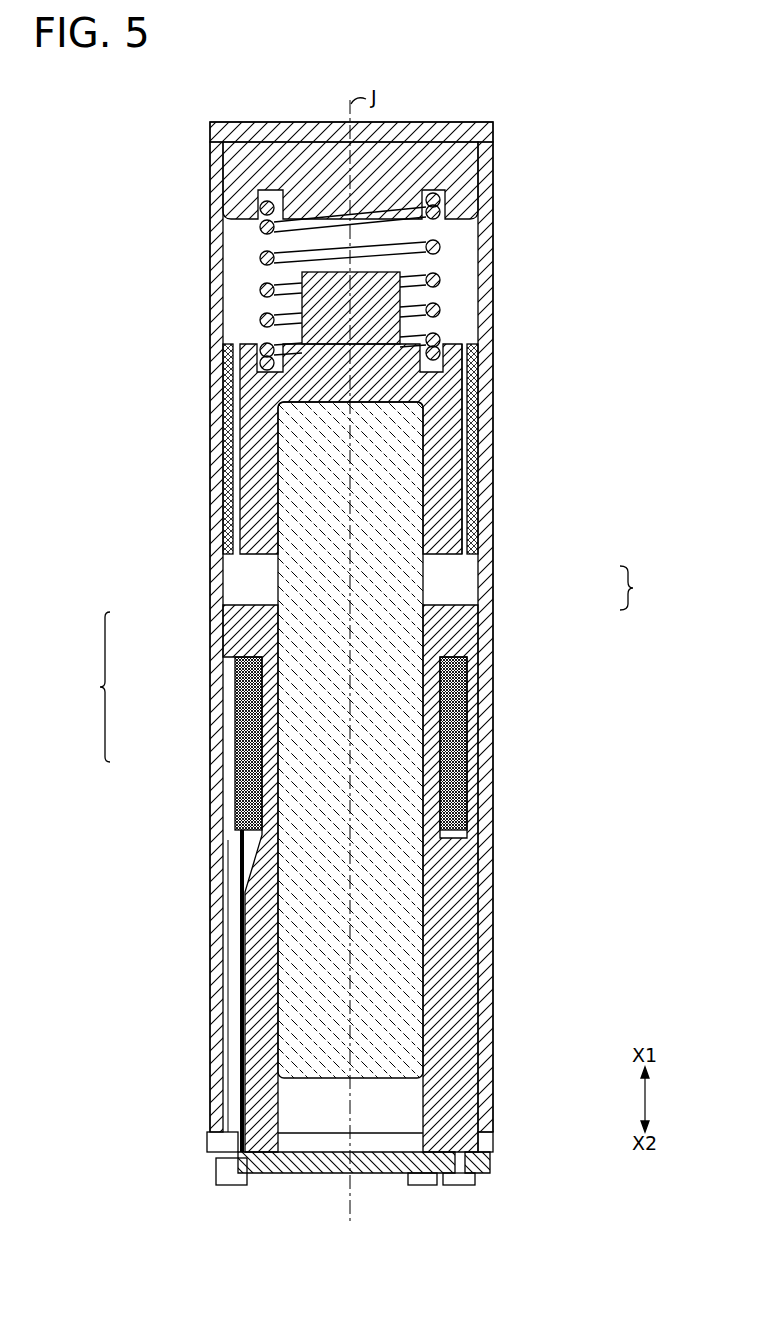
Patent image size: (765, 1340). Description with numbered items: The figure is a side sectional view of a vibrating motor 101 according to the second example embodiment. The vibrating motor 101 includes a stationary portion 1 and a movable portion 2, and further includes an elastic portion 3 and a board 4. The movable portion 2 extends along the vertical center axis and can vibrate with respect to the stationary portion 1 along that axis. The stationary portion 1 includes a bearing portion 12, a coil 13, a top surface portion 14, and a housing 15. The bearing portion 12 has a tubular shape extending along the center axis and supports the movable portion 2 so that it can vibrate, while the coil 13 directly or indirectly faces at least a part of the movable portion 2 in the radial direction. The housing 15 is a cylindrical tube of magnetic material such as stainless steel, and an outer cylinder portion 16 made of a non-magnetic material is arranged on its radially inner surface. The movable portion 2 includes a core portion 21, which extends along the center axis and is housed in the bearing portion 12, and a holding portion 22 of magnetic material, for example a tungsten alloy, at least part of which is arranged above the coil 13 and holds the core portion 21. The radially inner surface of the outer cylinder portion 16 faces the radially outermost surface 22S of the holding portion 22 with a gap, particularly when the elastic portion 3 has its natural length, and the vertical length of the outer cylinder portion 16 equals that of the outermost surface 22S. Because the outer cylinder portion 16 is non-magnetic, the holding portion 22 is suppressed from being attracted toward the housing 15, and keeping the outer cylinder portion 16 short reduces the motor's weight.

The vibrating motor 101 is at (496, 98).
The stationary portion 1 is at (99, 687).
The movable portion 2 is at (634, 588).
The elastic portion 3 is at (422, 253).
The board 4 is at (278, 1168).
The bearing portion 12 is at (240, 630).
The coil 13 is at (235, 735).
The top surface portion 14 is at (212, 195).
The housing 15 is at (212, 803).
The outer cylinder portion 16 is at (476, 452).
The core portion 21 is at (400, 598).
The holding portion 22 is at (450, 524).
The outermost surface 22S is at (463, 398).